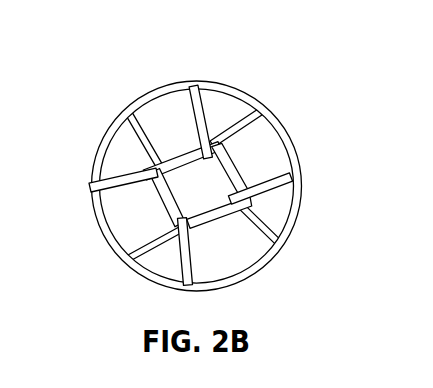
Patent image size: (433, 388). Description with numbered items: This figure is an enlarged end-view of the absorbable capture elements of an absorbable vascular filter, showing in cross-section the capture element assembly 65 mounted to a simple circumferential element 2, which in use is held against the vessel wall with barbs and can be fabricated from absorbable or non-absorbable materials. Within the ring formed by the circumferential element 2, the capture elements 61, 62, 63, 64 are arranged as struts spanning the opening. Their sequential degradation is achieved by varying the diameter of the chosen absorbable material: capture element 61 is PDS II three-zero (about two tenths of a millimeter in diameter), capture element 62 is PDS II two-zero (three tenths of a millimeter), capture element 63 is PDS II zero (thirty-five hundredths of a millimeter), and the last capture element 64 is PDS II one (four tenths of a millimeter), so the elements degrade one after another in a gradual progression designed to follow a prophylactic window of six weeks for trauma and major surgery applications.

The circumferential element 2 is at (290, 148).
The capture element 61 is at (190, 284).
The capture element 62 is at (243, 107).
The capture element 63 is at (130, 148).
The capture element 64 is at (257, 226).
The capture element assembly 65 is at (225, 66).